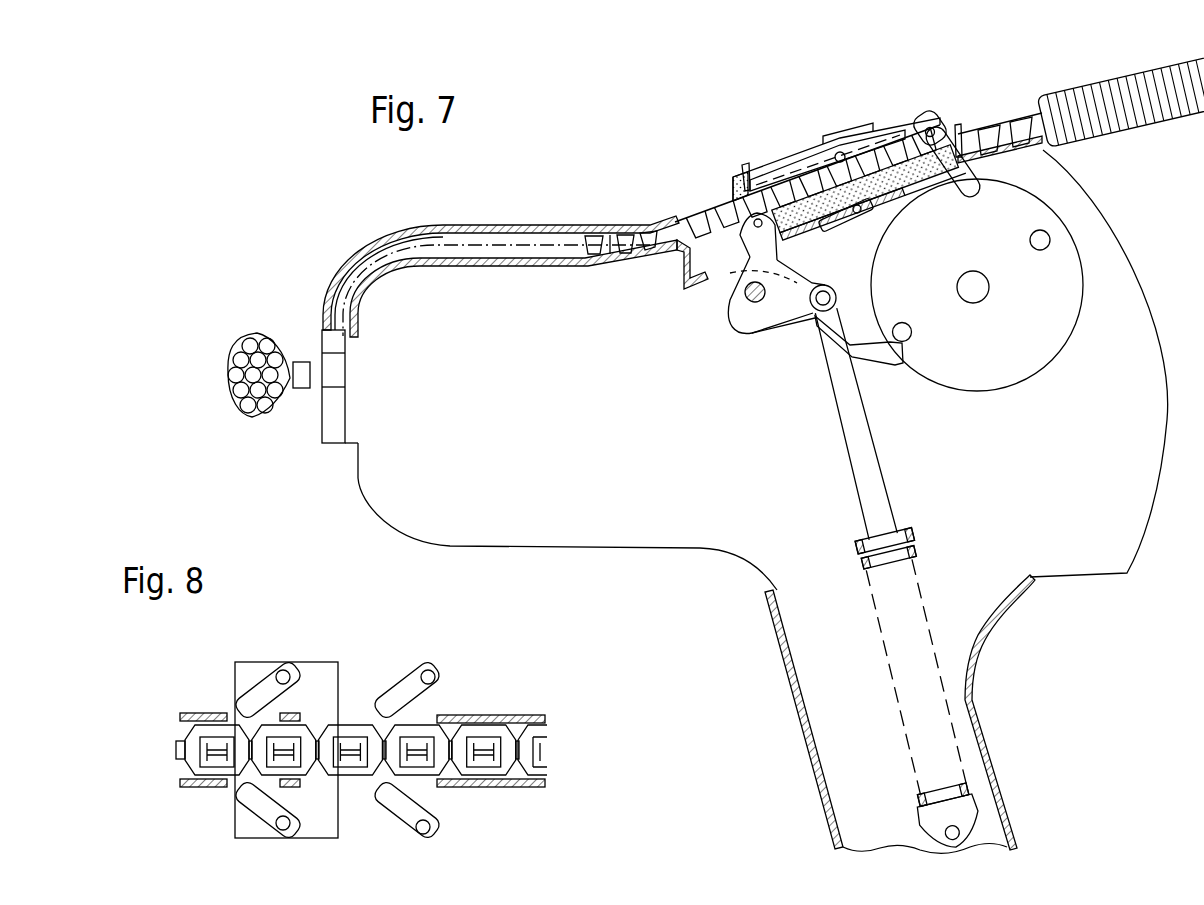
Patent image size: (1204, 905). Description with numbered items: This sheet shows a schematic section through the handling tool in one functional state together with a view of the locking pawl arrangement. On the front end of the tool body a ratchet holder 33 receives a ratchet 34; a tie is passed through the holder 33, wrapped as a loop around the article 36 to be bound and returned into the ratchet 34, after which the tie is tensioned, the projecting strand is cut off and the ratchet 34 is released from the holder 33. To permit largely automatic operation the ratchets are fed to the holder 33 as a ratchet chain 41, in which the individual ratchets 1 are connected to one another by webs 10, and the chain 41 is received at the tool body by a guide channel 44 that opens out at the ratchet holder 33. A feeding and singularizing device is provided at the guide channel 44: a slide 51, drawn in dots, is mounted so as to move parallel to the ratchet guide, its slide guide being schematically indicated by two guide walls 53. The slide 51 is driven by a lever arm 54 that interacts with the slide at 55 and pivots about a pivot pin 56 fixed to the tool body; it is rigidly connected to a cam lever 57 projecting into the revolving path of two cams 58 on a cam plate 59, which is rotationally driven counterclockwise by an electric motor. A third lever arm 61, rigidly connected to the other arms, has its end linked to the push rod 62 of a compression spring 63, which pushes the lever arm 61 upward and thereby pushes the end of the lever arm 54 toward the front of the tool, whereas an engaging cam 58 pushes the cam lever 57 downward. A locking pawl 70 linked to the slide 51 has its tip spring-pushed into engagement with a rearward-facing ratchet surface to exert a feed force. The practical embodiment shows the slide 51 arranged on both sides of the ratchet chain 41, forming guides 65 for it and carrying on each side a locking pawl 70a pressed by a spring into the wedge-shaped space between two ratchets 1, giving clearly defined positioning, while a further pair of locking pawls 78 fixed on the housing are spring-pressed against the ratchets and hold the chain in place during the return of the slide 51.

In FIG. 7, the ratchet 1 is at (615, 256).
In FIG. 8, the ratchet 1 is at (196, 737).
In FIG. 8, the web 10 is at (452, 762).
In FIG. 7, the ratchet holder 33 is at (334, 373).
In FIG. 7, the ratchet 34 is at (305, 392).
In FIG. 7, the article to be bound 36 is at (248, 336).
In FIG. 7, the ratchet chain 41 is at (975, 122).
In FIG. 8, the ratchet chain 41 is at (176, 745).
In FIG. 7, the guide channel 44 is at (497, 268).
In FIG. 8, the guide channel 44 is at (513, 714).
In FIG. 7, the slide 51 is at (930, 188).
In FIG. 8, the slide 51 is at (237, 802).
In FIG. 7, the guide wall 53 is at (853, 150).
In FIG. 7, the lever arm 54 is at (728, 262).
In FIG. 7, the interaction point 55 is at (745, 240).
In FIG. 7, the pivot pin 56 is at (753, 305).
In FIG. 7, the cam lever 57 is at (905, 354).
In FIG. 7, the cam 58 is at (912, 330).
In FIG. 7, the cam plate 59 is at (1045, 332).
In FIG. 7, the third lever arm 61 is at (805, 305).
In FIG. 7, the push rod 62 is at (855, 415).
In FIG. 7, the compression spring 63 is at (868, 572).
In FIG. 8, the guide 65 is at (297, 716).
In FIG. 7, the locking pawl 70 is at (845, 225).
In FIG. 8, the locking pawl 70a is at (250, 707).
In FIG. 8, the locking pawl 78 is at (407, 700).